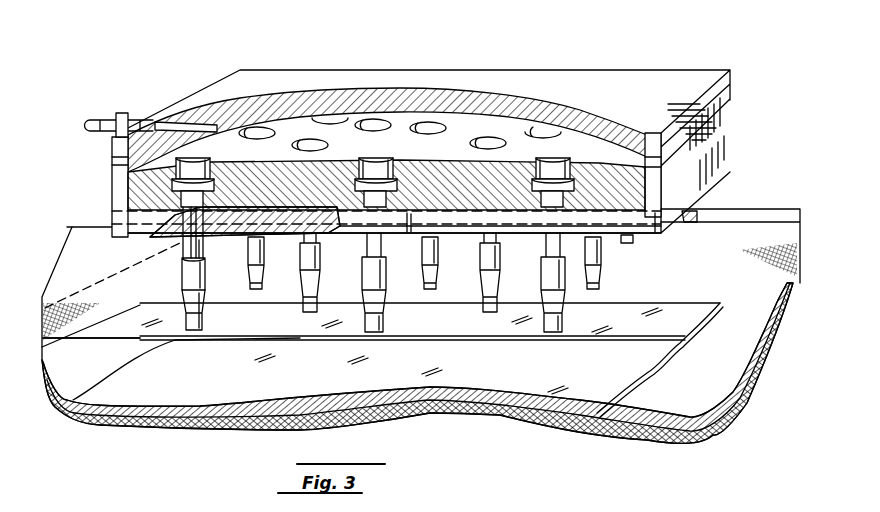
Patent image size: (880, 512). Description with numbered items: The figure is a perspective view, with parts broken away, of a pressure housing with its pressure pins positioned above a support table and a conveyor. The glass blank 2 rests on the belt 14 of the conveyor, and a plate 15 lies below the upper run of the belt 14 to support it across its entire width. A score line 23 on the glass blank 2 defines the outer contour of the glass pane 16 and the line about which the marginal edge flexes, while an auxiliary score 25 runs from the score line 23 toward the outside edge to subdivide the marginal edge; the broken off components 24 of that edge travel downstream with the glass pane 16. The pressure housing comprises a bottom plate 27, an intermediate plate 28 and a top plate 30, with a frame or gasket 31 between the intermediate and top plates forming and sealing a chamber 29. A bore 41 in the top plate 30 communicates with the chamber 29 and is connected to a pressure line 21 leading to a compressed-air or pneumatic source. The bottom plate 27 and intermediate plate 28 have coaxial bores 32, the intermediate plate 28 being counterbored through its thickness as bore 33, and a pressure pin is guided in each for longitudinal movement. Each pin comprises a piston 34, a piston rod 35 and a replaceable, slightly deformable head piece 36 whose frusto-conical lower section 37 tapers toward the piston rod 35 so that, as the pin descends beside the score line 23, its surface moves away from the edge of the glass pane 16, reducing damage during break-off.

The glass blank 2 is at (690, 347).
The belt 14 is at (92, 233).
The plate 15 is at (100, 297).
The glass pane 16 is at (647, 371).
The pressure line 21 is at (100, 123).
The score line 23 is at (122, 363).
The broken off components 24 is at (454, 328).
The auxiliary score 25 is at (103, 340).
The bottom plate 27 is at (457, 233).
The intermediate plate 28 is at (472, 193).
The chamber 29 is at (400, 139).
The top plate 30 is at (282, 73).
The frame or gasket 31 is at (115, 165).
The bores 32 is at (190, 225).
The bore in intermediate plate 33 is at (205, 168).
The piston 34 is at (203, 213).
The piston rod 35 is at (200, 257).
The head piece 36 is at (182, 278).
The lower section 37 is at (203, 323).
The bore 41 is at (207, 125).